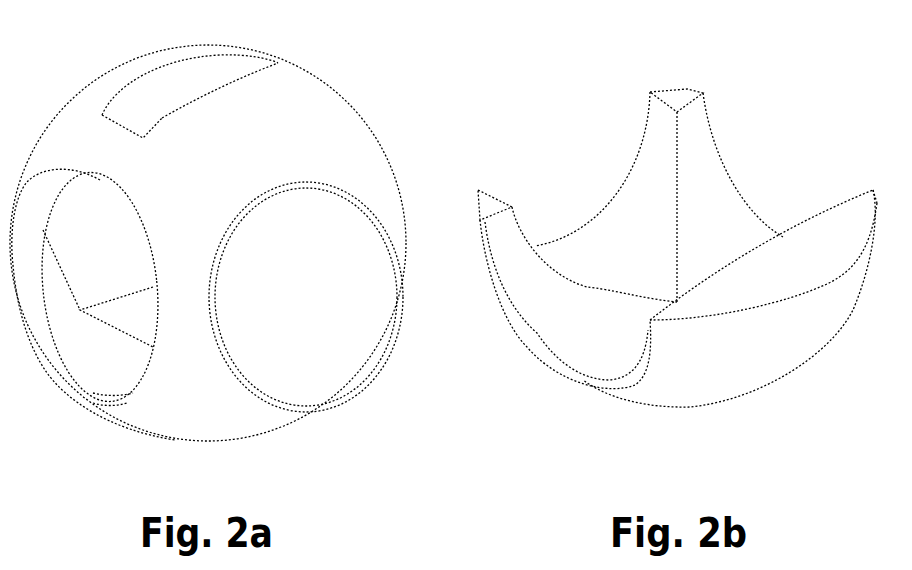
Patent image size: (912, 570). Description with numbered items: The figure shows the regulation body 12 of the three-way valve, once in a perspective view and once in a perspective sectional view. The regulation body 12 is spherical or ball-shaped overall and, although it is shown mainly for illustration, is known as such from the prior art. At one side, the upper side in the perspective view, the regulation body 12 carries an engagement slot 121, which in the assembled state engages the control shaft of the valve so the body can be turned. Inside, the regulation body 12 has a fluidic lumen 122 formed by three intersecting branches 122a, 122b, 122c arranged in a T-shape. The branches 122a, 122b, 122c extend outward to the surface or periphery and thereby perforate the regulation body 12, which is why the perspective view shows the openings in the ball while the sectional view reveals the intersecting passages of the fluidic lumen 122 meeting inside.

In FIG. 2A, the regulation body 12 is at (269, 225).
In FIG. 2B, the regulation body 12 is at (638, 298).
In FIG. 2A, the engagement slot 121 is at (177, 98).
In FIG. 2B, the fluidic lumen 122 is at (638, 293).
In FIG. 2B, the branch 122a is at (577, 312).
In FIG. 2B, the branch 122b is at (610, 257).
In FIG. 2B, the branch 122c is at (717, 223).